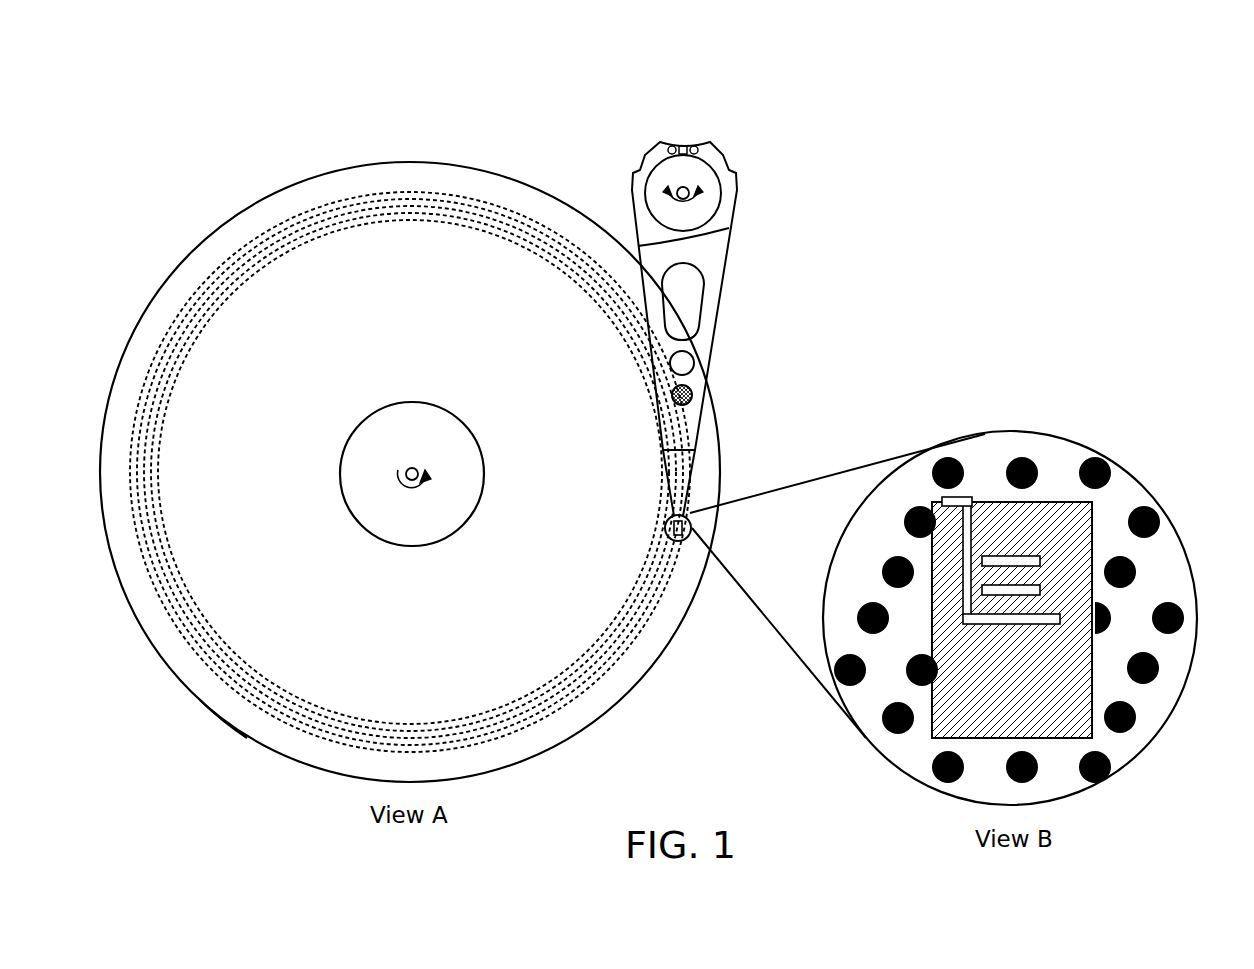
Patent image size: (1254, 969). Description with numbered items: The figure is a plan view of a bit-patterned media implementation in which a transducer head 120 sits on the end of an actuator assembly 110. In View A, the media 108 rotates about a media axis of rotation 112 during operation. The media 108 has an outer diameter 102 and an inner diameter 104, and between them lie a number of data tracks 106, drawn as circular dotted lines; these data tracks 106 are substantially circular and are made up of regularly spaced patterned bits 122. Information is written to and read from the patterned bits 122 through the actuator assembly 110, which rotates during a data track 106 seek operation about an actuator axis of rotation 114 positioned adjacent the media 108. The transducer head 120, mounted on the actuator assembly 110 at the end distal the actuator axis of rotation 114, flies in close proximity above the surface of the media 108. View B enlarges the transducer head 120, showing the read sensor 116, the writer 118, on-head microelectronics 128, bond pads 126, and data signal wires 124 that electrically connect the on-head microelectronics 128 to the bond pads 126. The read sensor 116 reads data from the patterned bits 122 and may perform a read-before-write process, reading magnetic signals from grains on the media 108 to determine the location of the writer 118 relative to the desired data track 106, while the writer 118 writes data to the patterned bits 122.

The outer diameter 102 is at (480, 170).
The inner diameter 104 is at (444, 410).
The data tracks 106 is at (300, 212).
The media 108 is at (247, 738).
The actuator assembly 110 is at (642, 282).
The media axis of rotation 112 is at (423, 480).
The actuator axis of rotation 114 is at (710, 198).
The read sensor 116 is at (1040, 590).
The writer 118 is at (1040, 562).
The transducer head 120 is at (692, 525).
The patterned bits 122 is at (1010, 455).
The data signal wires 124 is at (957, 553).
The bond pads 126 is at (942, 503).
The on-head microelectronics 128 is at (963, 620).